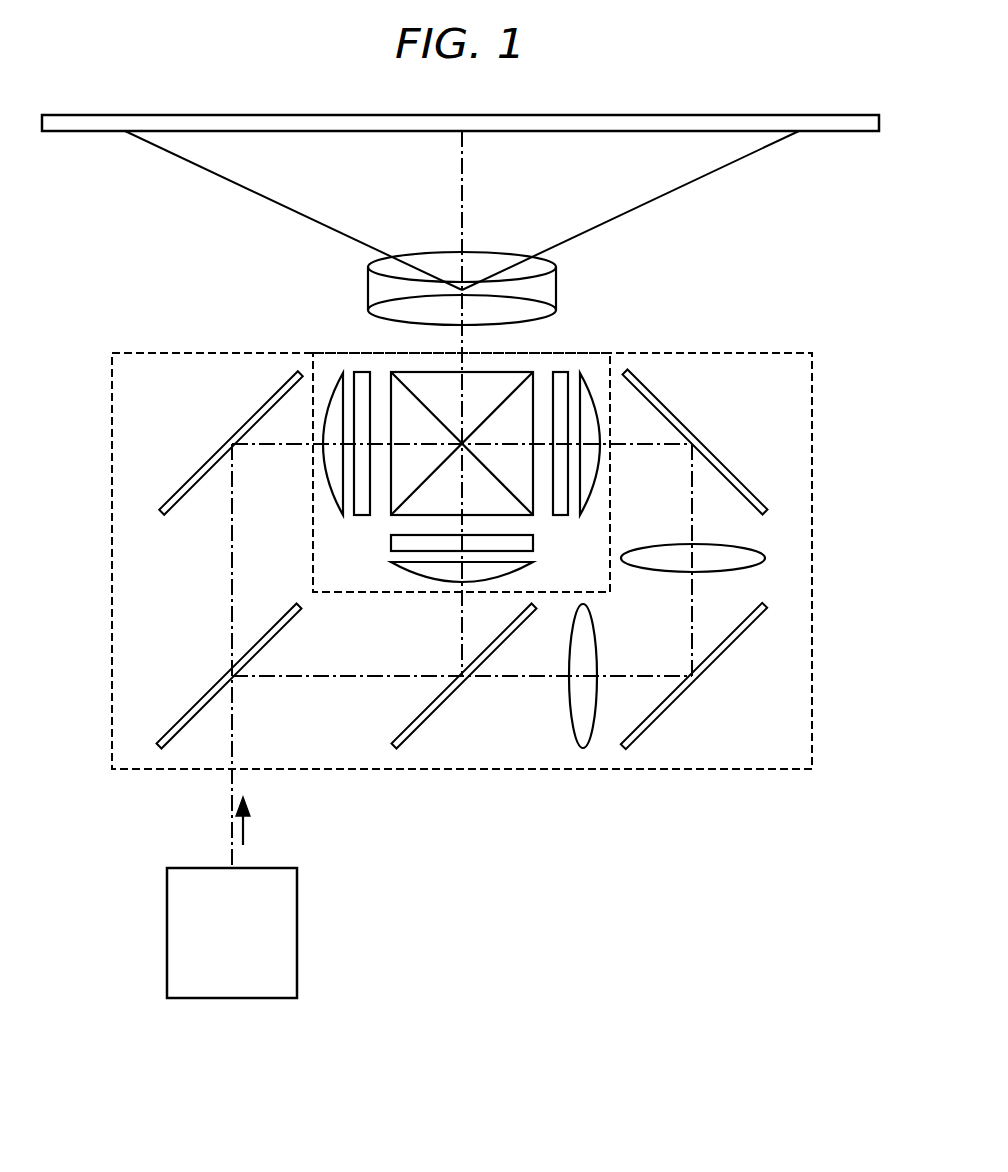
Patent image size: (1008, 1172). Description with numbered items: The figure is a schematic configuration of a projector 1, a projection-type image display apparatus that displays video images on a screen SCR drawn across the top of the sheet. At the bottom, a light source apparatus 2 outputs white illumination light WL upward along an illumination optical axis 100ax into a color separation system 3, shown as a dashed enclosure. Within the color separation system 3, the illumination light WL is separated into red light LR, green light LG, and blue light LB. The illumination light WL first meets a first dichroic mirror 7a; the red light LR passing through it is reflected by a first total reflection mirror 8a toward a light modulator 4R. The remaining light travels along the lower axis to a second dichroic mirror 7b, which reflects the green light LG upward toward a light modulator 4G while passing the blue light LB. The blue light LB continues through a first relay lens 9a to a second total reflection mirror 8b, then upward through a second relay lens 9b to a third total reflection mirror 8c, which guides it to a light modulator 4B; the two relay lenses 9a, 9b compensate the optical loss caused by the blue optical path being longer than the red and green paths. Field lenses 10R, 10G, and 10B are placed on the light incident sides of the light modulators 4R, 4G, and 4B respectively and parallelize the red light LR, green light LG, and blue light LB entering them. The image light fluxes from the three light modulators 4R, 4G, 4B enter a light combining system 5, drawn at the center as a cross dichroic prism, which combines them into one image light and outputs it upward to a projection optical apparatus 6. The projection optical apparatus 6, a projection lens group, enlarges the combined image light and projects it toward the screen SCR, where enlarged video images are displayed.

The projector 1 is at (822, 324).
The light source apparatus 2 is at (298, 937).
The color separation system 3 is at (112, 503).
The light modulator 4R is at (362, 372).
The light modulator 4G is at (391, 541).
The light modulator 4B is at (560, 372).
The light combining system 5 is at (487, 378).
The projection optical apparatus 6 is at (440, 262).
The first dichroic mirror 7a is at (194, 707).
The second dichroic mirror 7b is at (440, 708).
The first total reflection mirror 8a is at (205, 460).
The second total reflection mirror 8b is at (718, 658).
The third total reflection mirror 8c is at (722, 462).
The first relay lens 9a is at (568, 700).
The second relay lens 9b is at (757, 548).
The field lens 10R is at (335, 372).
The field lens 10G is at (391, 567).
The field lens 10B is at (590, 372).
The illumination optical axis 100ax is at (228, 840).
The illumination light WL is at (247, 824).
The red light LR is at (230, 584).
The green light LG is at (462, 630).
The blue light LB is at (692, 620).
The screen SCR is at (845, 131).